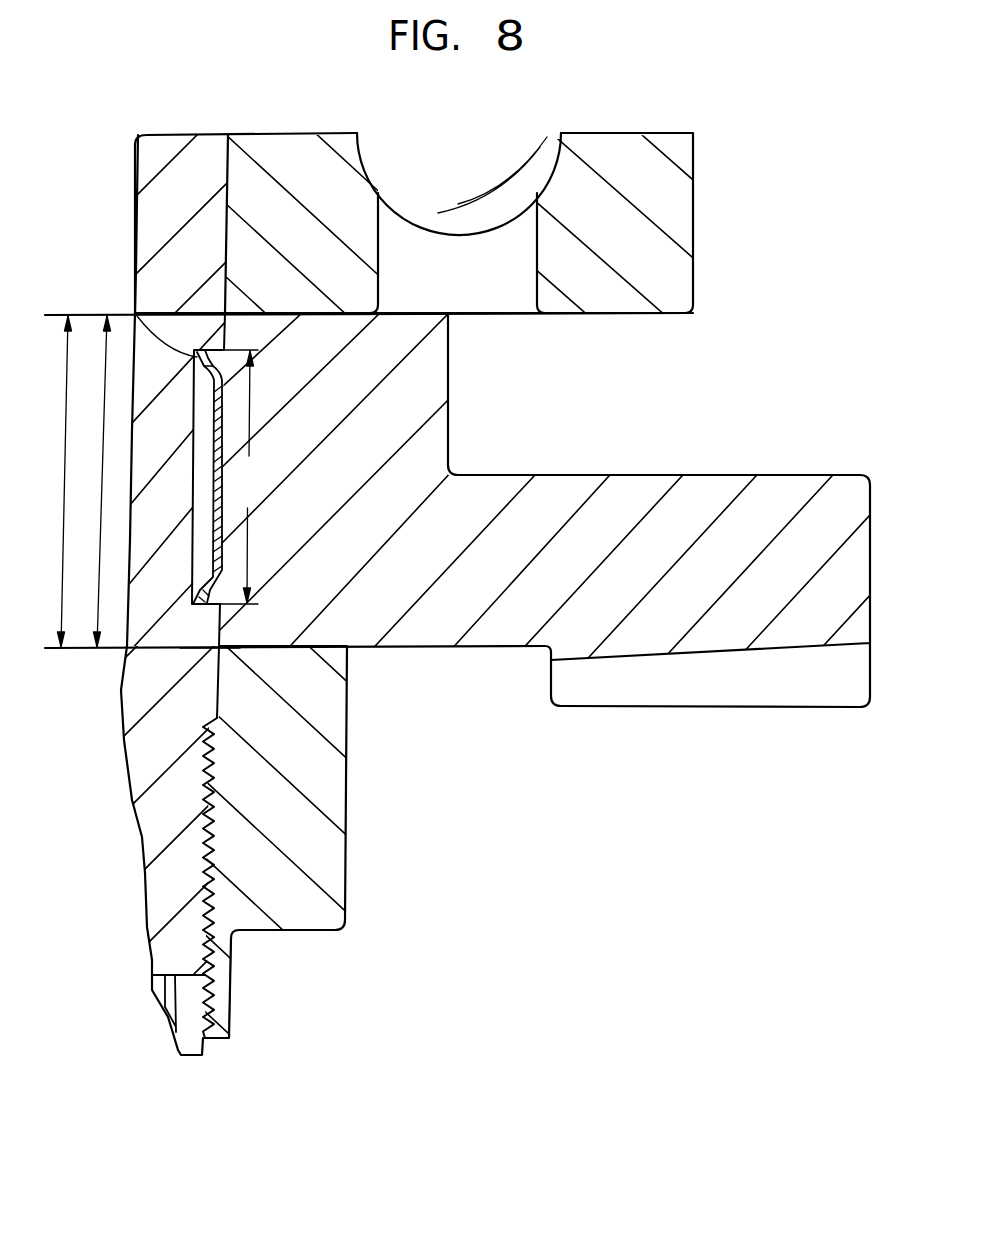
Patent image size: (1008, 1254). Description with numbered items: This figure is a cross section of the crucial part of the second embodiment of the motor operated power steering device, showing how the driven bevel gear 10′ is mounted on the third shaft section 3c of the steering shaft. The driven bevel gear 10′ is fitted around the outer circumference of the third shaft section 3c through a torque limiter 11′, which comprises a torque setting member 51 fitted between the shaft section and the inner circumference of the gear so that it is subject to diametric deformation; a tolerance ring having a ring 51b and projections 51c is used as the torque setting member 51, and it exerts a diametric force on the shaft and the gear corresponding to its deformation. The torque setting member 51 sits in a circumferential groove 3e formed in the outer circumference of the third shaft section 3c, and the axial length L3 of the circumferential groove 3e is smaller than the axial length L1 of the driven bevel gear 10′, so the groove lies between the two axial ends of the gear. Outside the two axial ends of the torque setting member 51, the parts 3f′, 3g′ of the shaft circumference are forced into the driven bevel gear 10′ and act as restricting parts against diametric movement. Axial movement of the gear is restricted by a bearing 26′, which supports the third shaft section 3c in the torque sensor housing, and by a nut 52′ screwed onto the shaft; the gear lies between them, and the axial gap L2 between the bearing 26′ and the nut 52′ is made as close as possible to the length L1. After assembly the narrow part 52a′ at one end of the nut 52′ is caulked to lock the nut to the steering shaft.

The third shaft section 3c is at (168, 192).
The restricting part 3f′ is at (230, 321).
The bearing 26′ is at (462, 148).
The driven bevel gear 10′ is at (458, 612).
The torque limiter 11′ is at (212, 401).
The ring 51b is at (141, 317).
The torque setting member 51 is at (207, 500).
The projections 51c is at (213, 432).
The circumferential groove 3e is at (242, 602).
The restricting part 3g′ is at (195, 650).
The nut 52′ is at (316, 864).
The narrow part 52a′ is at (217, 992).
The axial length of the driven bevel gear L1 is at (98, 481).
The axial gap between the bearing and the nut L2 is at (56, 481).
The axial length of the circumferential groove L3 is at (245, 476).